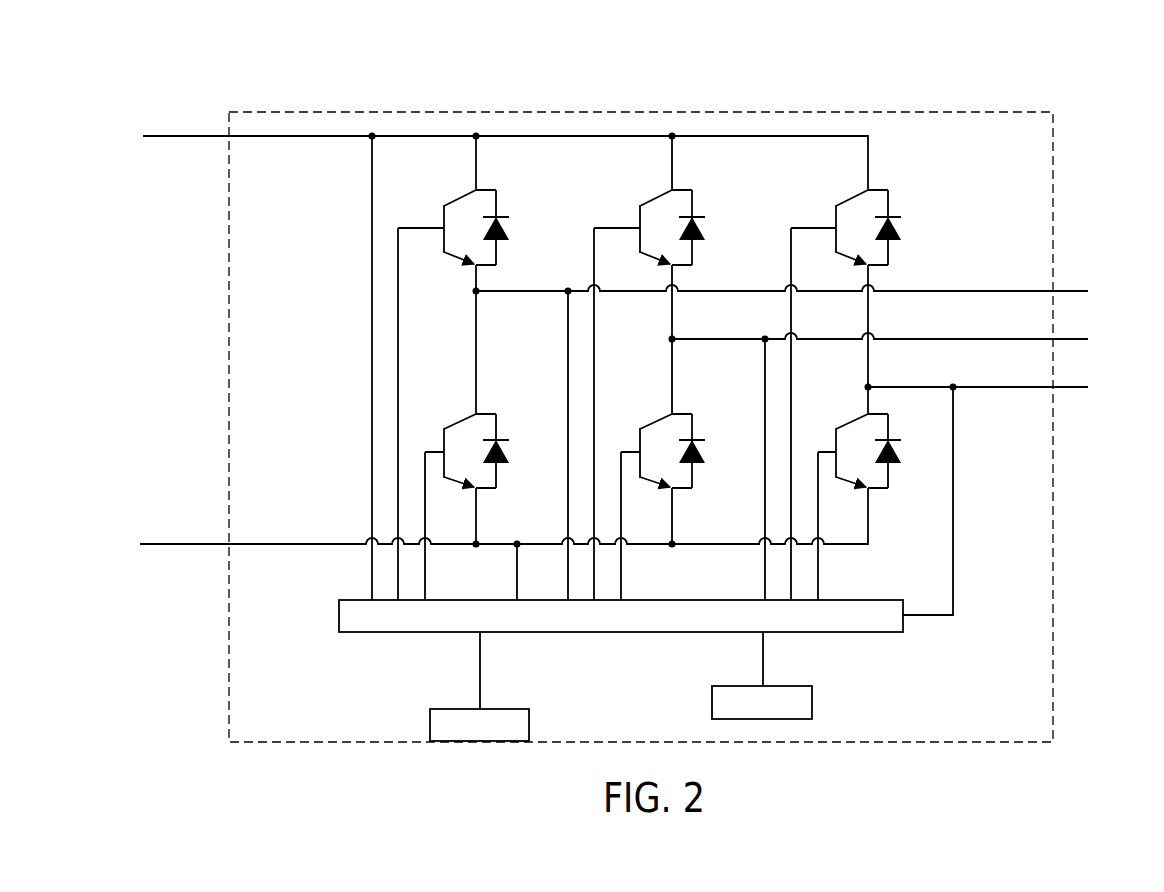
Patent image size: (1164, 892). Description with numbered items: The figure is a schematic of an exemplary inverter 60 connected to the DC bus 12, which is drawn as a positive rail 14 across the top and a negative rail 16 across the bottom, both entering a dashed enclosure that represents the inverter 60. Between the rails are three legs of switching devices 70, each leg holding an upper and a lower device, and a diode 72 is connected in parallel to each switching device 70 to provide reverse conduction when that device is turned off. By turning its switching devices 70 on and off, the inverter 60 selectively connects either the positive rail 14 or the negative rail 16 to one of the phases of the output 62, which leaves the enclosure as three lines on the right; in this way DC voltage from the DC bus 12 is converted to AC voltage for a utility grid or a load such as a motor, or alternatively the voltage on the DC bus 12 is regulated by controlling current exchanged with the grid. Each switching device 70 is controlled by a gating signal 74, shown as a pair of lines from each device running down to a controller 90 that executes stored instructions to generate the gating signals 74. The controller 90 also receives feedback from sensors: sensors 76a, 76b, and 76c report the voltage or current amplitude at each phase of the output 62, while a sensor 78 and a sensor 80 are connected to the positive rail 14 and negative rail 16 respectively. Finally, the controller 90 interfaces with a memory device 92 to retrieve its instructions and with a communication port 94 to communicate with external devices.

The DC bus 12 is at (277, 125).
The positive rail 14 is at (318, 140).
The negative rail 16 is at (318, 548).
The inverter 60 is at (902, 112).
The output 62 is at (1070, 273).
The switching devices 70 is at (453, 190).
The diode 72 is at (513, 232).
The gating signal 74 is at (425, 451).
The sensor 76a is at (568, 289).
The sensor 76b is at (765, 337).
The sensor 76c is at (953, 385).
The current and/or voltage sensor 78 is at (371, 138).
The current and/or voltage sensor 80 is at (517, 542).
The controller 90 is at (403, 633).
The memory device 92 is at (712, 702).
The communication port 94 is at (430, 730).